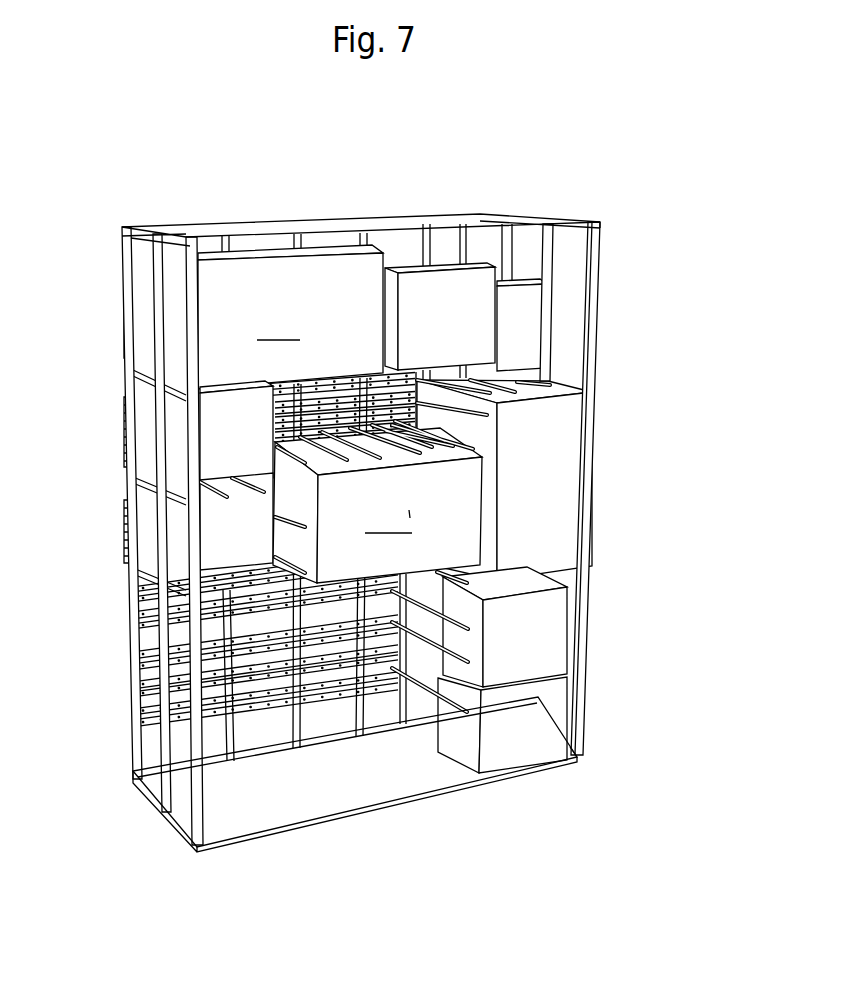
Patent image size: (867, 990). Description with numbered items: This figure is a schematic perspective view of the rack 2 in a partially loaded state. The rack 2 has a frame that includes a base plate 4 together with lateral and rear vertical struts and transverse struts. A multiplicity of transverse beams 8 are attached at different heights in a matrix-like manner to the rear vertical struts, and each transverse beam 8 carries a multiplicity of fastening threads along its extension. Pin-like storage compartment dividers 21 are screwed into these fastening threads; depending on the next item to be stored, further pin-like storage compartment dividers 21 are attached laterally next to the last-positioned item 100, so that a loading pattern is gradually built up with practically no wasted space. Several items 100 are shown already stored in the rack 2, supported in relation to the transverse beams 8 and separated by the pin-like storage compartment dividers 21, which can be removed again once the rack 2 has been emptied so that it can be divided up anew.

The rack 2 is at (157, 196).
The base plate 4 is at (328, 787).
The transverse beams 8 is at (252, 713).
The pin-like storage compartment dividers 21 is at (442, 447).
The items 100 is at (395, 509).